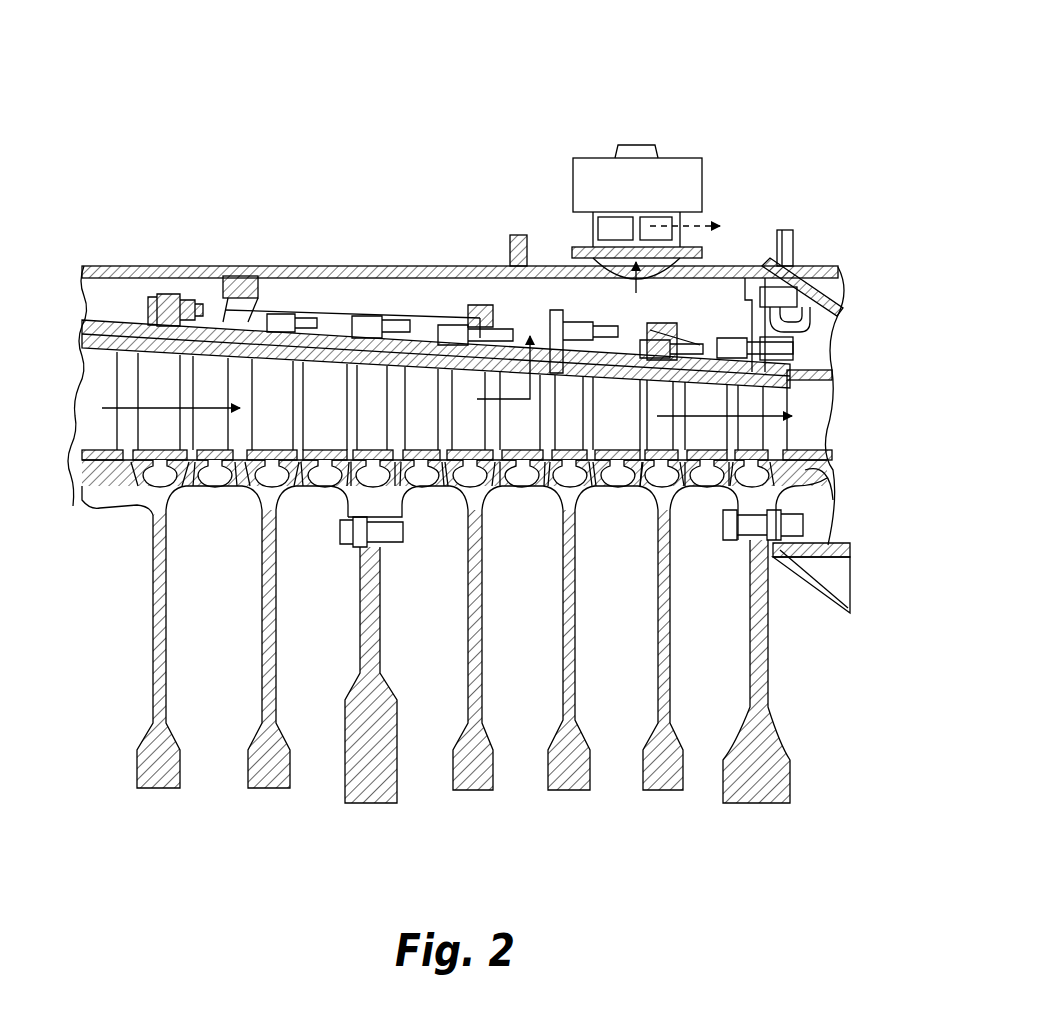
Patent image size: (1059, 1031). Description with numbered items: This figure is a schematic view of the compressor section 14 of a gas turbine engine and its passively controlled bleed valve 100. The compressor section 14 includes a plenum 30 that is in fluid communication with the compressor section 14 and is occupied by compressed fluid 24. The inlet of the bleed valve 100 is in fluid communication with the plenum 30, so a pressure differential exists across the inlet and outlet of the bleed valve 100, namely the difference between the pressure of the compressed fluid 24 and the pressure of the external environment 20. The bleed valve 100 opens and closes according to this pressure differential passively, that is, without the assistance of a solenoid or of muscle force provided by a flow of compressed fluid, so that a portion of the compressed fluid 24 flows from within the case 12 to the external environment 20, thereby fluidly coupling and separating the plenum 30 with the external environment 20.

The external environment 20 is at (757, 38).
The case 12 is at (232, 258).
The plenum 30 is at (415, 297).
The bleed valve 100 is at (592, 127).
The compressed fluid 24 is at (528, 332).
The compressor section 14 is at (172, 832).